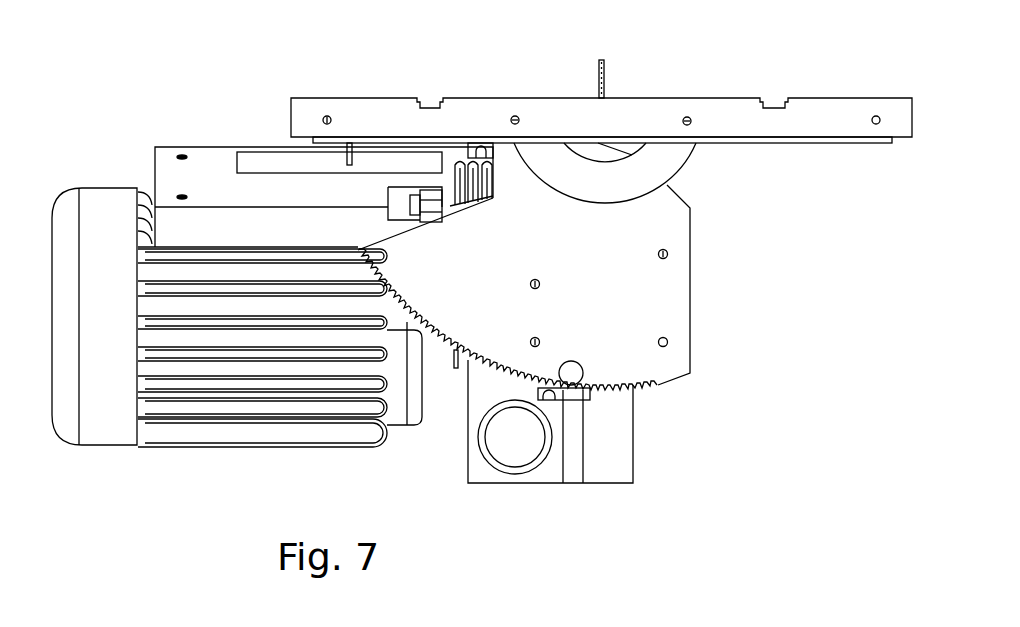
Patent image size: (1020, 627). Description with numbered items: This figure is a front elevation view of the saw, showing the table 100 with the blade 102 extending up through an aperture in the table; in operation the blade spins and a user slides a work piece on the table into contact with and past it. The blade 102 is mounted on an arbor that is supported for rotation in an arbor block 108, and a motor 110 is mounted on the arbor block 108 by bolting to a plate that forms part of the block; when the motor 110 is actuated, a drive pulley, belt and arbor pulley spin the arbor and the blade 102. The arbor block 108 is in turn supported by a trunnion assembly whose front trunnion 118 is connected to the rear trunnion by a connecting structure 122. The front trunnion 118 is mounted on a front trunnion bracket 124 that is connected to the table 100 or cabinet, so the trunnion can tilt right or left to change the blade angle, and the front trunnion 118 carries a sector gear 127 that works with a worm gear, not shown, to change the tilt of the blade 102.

The table 100 is at (825, 113).
The blade 102 is at (600, 77).
The arbor block 108 is at (208, 173).
The motor 110 is at (97, 408).
The front trunnion 118 is at (658, 289).
The structure 122 is at (545, 483).
The front trunnion bracket 124 is at (667, 158).
The sector gear 127 is at (658, 387).